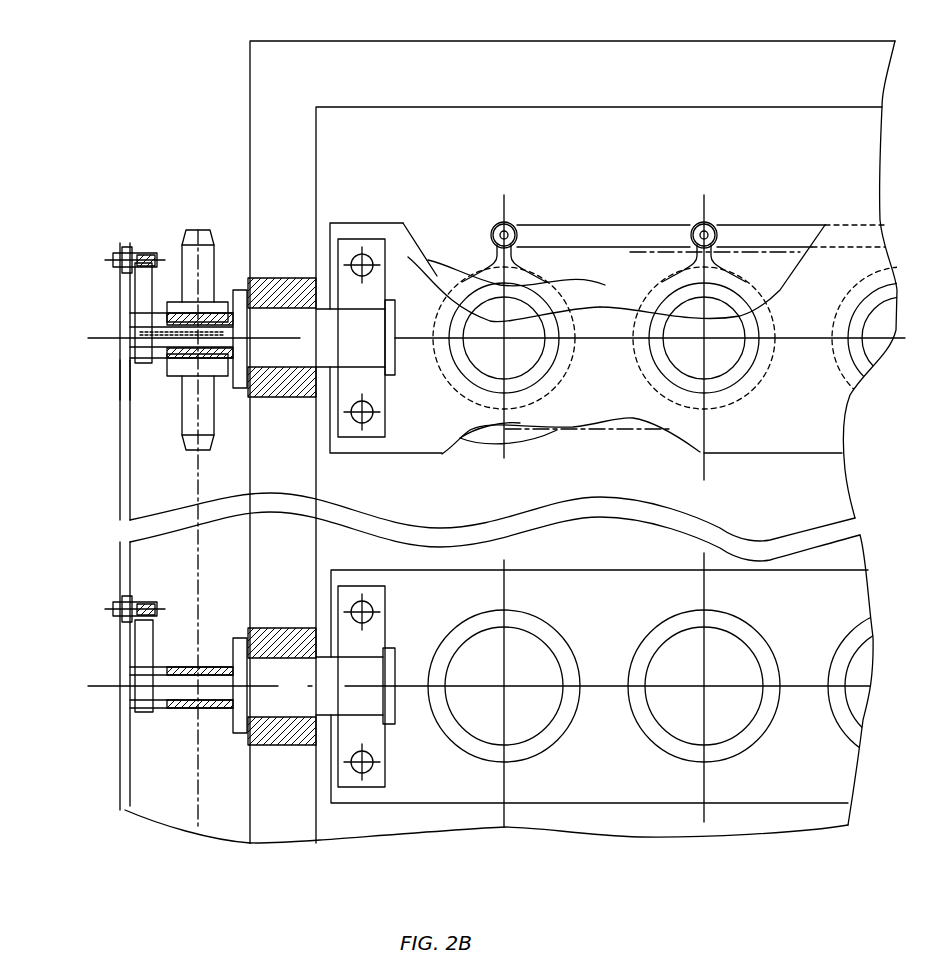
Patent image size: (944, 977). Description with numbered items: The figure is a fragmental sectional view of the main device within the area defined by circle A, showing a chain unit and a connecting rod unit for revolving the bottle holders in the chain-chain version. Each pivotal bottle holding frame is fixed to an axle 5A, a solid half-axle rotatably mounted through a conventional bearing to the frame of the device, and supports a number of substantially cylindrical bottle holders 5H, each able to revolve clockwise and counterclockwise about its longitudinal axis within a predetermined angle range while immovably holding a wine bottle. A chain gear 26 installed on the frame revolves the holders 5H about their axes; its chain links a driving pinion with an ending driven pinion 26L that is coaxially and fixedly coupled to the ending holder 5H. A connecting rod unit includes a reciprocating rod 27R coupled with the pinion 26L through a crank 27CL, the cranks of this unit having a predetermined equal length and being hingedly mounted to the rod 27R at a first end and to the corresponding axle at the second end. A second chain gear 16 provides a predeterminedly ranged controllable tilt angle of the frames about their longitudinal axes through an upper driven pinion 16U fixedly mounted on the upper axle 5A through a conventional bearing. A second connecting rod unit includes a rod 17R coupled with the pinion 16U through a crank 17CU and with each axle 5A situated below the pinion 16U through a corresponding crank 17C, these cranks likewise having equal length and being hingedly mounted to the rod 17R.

The circle A area A is at (573, 424).
The axle 5A is at (303, 322).
The bottle holder 5H is at (553, 295).
The second chain gear 16 is at (192, 476).
The upper driven pinion 16U is at (188, 262).
The crank 17CU is at (145, 302).
The rod 17R is at (125, 387).
The crank 17C is at (147, 645).
The chain gear 26 is at (783, 250).
The ending driven pinion 26L is at (498, 437).
The crank 27CL is at (488, 275).
The reciprocating rod 27R is at (643, 233).